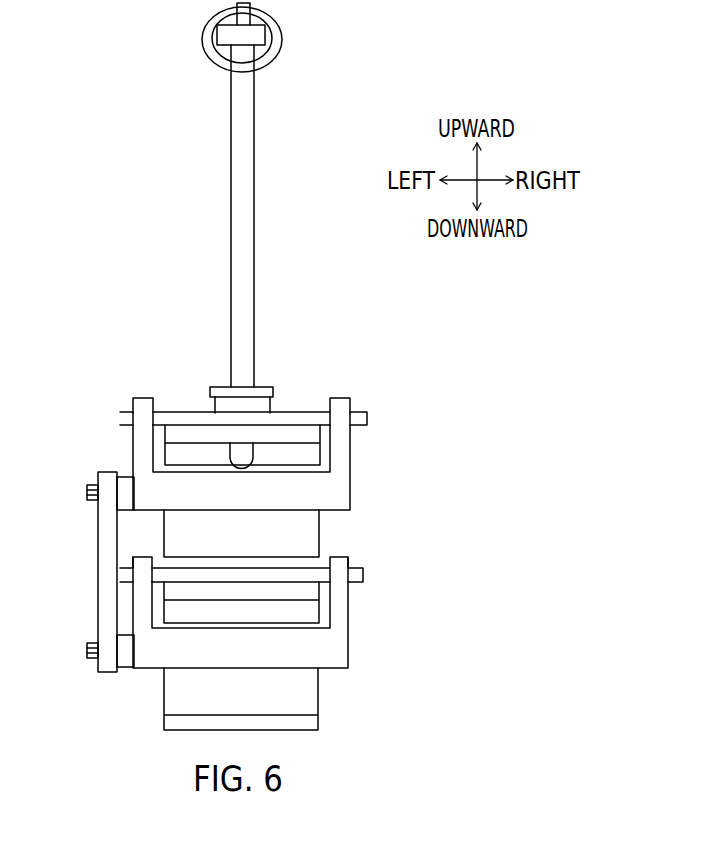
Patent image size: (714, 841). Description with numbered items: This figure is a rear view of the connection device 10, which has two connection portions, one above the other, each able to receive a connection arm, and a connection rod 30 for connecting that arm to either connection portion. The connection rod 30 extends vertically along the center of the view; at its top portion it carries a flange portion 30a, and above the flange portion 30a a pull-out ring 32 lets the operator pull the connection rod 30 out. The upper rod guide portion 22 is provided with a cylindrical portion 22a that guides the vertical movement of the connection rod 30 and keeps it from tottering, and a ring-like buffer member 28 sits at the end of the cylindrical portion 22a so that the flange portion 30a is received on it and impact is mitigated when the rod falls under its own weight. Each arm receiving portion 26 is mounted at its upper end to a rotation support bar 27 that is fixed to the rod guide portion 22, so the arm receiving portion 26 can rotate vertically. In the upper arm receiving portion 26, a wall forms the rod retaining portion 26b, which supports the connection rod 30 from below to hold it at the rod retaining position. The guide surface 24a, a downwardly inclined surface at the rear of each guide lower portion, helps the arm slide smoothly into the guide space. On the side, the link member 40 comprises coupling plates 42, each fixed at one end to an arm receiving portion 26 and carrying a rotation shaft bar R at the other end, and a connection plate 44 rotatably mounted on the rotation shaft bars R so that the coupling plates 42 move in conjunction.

The connection device 10 is at (122, 321).
The pull-out ring 32 is at (278, 36).
The flange portion 30a is at (220, 36).
The connection rod 30 is at (229, 172).
The buffer member 28 is at (263, 392).
The cylindrical portion 22a is at (262, 405).
The rotation support bar 27 is at (357, 418).
The rod guide portion 22 is at (324, 433).
The rod retaining portion 26b is at (295, 462).
The arm receiving portion 26 is at (243, 487).
The guide surface 24a is at (300, 542).
The link member 40 is at (53, 522).
The connection plate 44 is at (105, 573).
The coupling plate 42 is at (125, 498).
The rotation shaft bar R is at (87, 492).